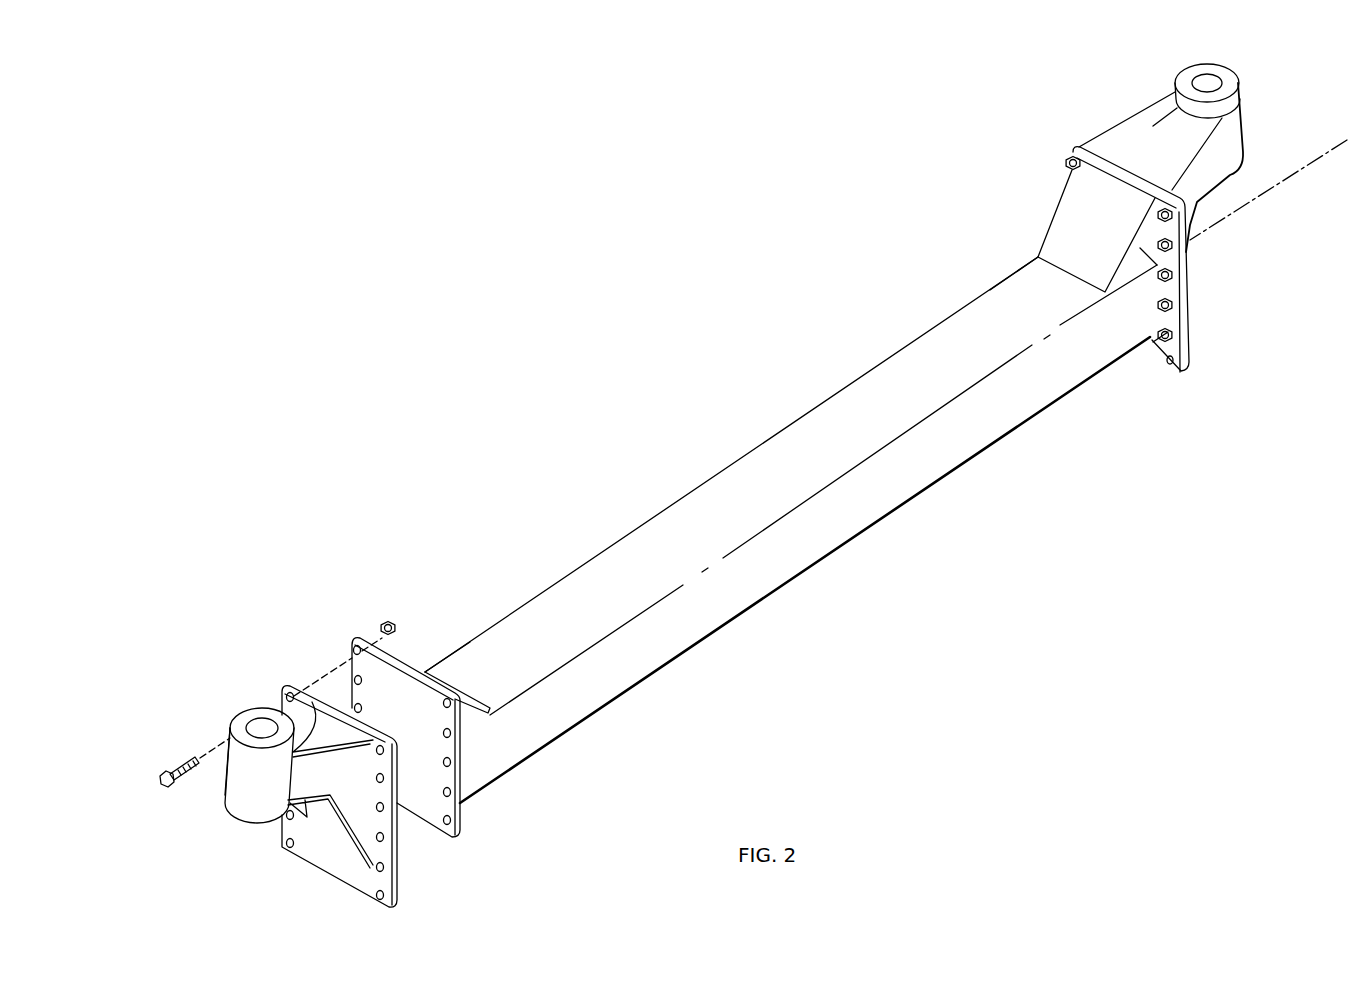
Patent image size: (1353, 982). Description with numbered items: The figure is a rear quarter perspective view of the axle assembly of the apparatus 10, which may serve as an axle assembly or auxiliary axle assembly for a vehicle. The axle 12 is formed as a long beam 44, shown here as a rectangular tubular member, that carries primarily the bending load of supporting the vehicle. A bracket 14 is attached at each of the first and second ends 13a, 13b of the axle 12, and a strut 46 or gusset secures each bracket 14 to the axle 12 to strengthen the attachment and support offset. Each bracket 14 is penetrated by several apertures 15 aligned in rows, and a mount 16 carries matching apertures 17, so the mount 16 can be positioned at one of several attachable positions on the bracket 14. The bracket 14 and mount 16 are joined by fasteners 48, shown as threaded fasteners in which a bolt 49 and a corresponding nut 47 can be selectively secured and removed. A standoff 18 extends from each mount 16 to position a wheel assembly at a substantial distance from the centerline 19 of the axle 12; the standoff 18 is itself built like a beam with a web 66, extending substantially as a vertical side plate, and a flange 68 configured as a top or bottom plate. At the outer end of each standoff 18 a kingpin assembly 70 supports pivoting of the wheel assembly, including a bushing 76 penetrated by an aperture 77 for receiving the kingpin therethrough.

The apparatus 10 is at (752, 240).
The axle 12 is at (696, 482).
The first end 13a is at (458, 642).
The second end 13b is at (987, 285).
The bracket 14 is at (410, 714).
The apertures 15 is at (355, 646).
The mount 16 is at (343, 854).
The apertures 17 is at (382, 896).
The standoff 18 is at (1203, 225).
The centerline 19 is at (1292, 180).
The beam 44 is at (668, 575).
The strut 46 is at (488, 706).
The nut 47 is at (390, 618).
The fasteners 48 is at (1066, 163).
The bolt 49 is at (165, 783).
The web 66 is at (273, 700).
The flange 68 is at (303, 736).
The kingpin assembly 70 is at (216, 795).
The bushing 76 is at (257, 808).
The aperture 77 is at (260, 722).